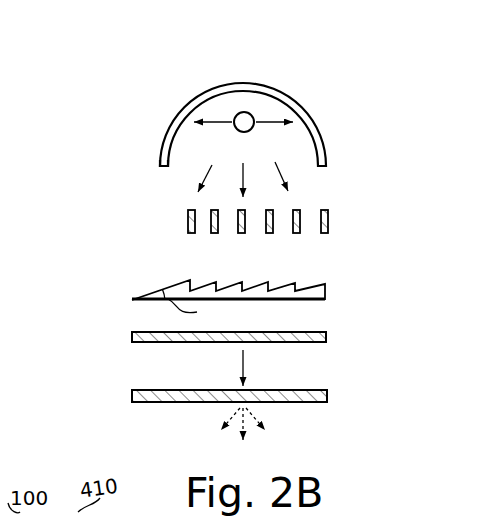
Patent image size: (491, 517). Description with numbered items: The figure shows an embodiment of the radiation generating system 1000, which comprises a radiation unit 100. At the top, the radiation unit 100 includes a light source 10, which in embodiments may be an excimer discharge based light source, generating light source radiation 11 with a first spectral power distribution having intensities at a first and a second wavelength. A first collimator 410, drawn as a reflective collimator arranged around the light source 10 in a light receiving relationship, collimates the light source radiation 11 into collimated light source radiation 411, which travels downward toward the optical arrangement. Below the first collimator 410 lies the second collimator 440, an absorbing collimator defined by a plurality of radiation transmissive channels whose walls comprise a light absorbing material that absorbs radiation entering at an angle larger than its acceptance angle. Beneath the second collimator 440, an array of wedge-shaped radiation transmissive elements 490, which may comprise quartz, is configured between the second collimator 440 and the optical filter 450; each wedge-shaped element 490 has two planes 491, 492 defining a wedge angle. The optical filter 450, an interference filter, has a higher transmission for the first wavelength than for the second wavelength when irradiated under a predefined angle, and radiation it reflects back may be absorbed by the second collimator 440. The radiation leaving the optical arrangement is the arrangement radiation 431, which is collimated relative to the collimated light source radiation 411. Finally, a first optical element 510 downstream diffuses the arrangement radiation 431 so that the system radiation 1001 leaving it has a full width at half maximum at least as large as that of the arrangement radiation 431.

The radiation generating system 1000 is at (292, 77).
The radiation unit 100 is at (179, 87).
The light source 10 is at (247, 110).
The light source radiation 11 is at (292, 118).
The first collimator 410 is at (162, 161).
The collimated light source radiation 411 is at (290, 187).
The second collimator 440 is at (181, 226).
The wedge-shaped radiation transmissive elements 490 is at (211, 290).
The plane 491 is at (290, 276).
The plane 492 is at (300, 301).
The optical filter 450 is at (128, 338).
The arrangement radiation 431 is at (247, 357).
The first optical element 510 is at (128, 396).
The system radiation 1001 is at (243, 427).